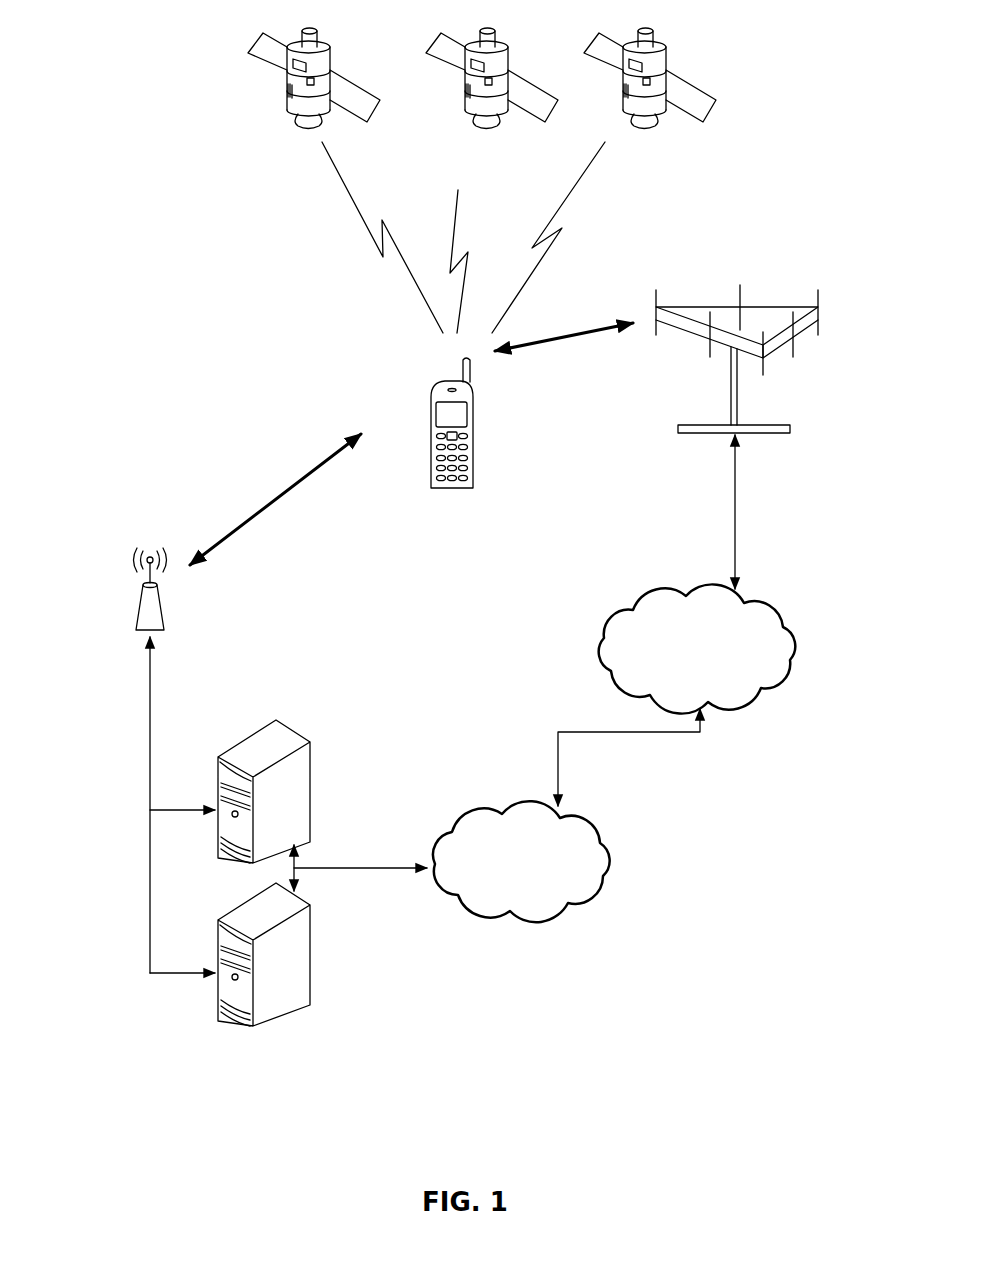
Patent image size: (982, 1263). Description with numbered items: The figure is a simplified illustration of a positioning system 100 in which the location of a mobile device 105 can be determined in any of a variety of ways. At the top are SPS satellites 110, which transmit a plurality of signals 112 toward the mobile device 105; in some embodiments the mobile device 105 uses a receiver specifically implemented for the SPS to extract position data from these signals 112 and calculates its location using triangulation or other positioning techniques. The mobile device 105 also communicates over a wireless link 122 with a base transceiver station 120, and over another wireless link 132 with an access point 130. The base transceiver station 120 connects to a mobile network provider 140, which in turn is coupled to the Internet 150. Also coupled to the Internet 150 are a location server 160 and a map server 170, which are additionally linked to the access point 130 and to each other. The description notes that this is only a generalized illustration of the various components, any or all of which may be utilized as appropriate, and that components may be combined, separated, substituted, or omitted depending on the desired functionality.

The positioning system 100 is at (163, 1051).
The mobile device 105 is at (430, 419).
The SPS satellites 110 is at (232, 86).
The signals 112 is at (457, 218).
The base transceiver station 120 is at (764, 436).
The wireless link to base station 122 is at (562, 345).
The access point 130 is at (160, 632).
The wireless link to access point 132 is at (278, 507).
The mobile network provider 140 is at (778, 613).
The Internet 150 is at (616, 873).
The location server 160 is at (290, 735).
The map server 170 is at (302, 945).